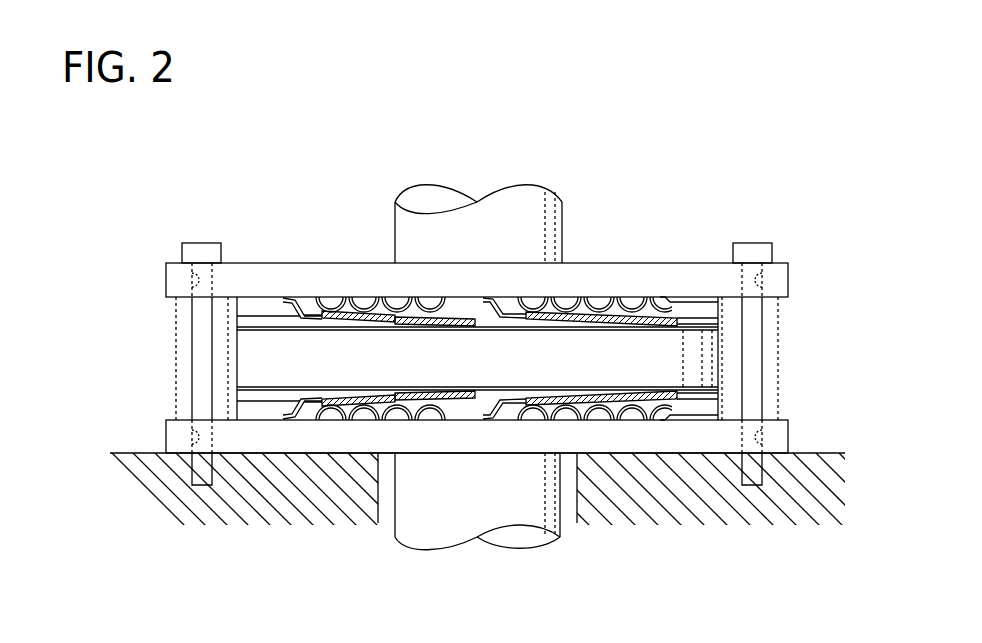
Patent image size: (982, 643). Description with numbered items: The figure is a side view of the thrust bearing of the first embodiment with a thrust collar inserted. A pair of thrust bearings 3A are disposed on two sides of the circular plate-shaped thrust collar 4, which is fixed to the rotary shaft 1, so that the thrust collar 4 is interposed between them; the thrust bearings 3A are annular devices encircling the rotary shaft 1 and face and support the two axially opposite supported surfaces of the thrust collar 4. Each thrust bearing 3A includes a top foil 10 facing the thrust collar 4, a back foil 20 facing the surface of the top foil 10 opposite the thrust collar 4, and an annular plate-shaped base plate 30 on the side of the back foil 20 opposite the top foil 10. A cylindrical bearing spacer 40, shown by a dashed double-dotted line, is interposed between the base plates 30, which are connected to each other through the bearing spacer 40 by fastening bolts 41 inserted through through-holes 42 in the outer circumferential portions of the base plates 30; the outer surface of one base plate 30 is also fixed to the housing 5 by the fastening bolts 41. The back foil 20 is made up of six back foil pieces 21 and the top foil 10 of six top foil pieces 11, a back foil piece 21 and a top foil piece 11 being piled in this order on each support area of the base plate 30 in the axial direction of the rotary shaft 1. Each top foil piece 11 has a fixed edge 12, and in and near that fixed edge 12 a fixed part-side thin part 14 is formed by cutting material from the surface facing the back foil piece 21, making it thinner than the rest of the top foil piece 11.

The rotary shaft 1 is at (392, 218).
The thrust bearing 3A is at (667, 226).
The thrust collar 4 is at (697, 357).
The housing 5 is at (273, 493).
The top foil 10 is at (600, 310).
The top foil piece 11 is at (382, 311).
The fixed edge 12 is at (292, 300).
The fixed part-side thin part 14 is at (308, 315).
The back foil 20 is at (610, 318).
The back foil piece 21 is at (340, 313).
The base plate 30 is at (694, 282).
The bearing spacer 40 is at (779, 360).
The fastening bolt 41 is at (206, 243).
The through-hole 42 is at (200, 284).